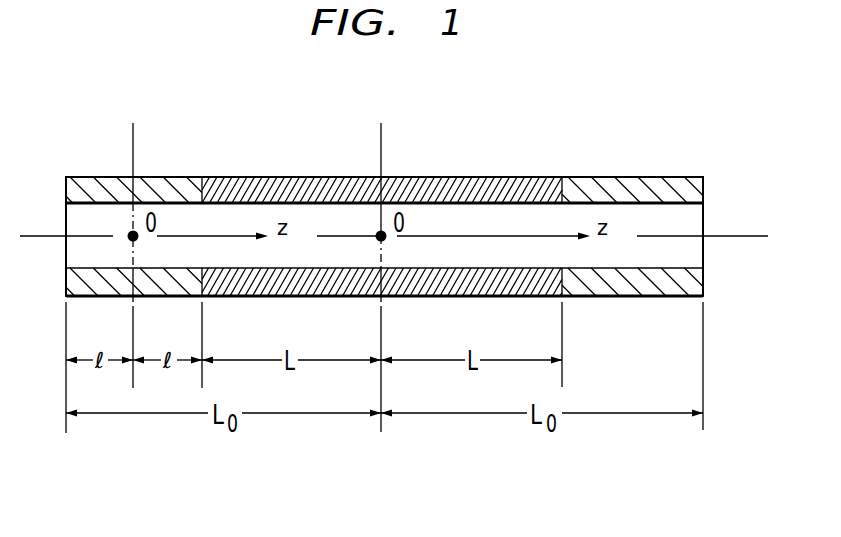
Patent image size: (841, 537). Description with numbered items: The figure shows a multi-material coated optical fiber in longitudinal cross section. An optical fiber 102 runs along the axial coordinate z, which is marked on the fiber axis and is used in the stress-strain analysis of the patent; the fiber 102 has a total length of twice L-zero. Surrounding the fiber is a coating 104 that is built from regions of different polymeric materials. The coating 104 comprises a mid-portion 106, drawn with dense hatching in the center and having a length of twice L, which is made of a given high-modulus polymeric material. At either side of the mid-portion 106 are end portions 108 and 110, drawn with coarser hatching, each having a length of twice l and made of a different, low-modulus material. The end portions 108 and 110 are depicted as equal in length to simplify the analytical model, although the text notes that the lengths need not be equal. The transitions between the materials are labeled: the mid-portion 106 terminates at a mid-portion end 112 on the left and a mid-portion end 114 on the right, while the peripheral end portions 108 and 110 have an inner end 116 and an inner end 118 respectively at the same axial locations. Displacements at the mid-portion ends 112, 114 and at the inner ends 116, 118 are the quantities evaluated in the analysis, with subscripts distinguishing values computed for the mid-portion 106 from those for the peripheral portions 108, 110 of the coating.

The optical fiber 102 is at (670, 222).
The coating 104 is at (420, 181).
The mid-portion 106 is at (342, 183).
The end portion 108 is at (90, 189).
The end portion 110 is at (632, 183).
The mid-portion end 112 is at (208, 178).
The mid-portion end 114 is at (557, 182).
The inner end of peripheral portion 116 is at (200, 285).
The inner end of peripheral portion 118 is at (568, 288).